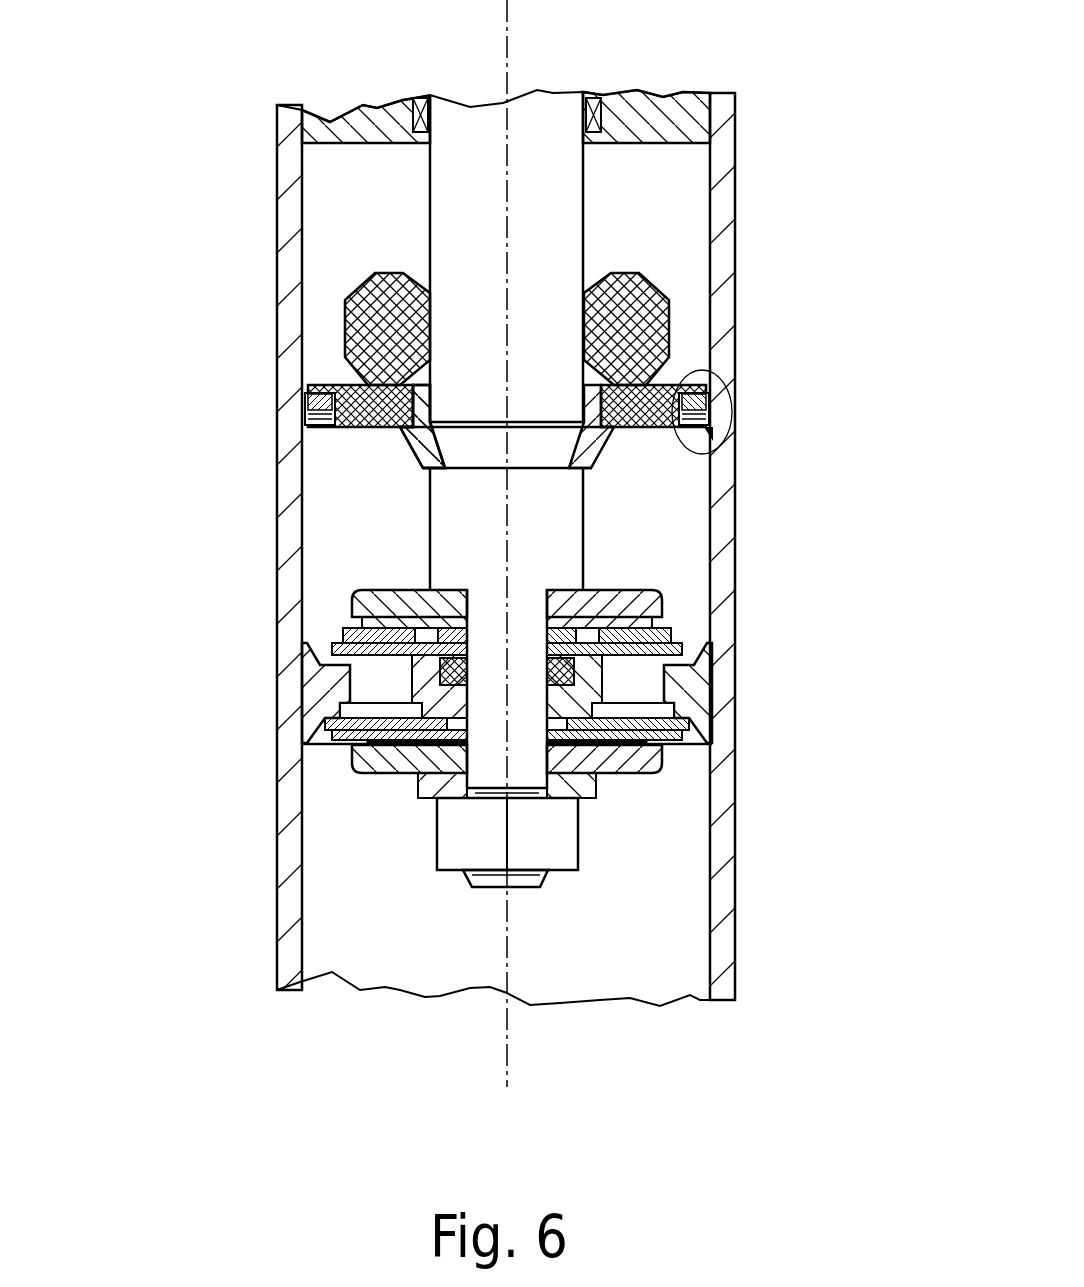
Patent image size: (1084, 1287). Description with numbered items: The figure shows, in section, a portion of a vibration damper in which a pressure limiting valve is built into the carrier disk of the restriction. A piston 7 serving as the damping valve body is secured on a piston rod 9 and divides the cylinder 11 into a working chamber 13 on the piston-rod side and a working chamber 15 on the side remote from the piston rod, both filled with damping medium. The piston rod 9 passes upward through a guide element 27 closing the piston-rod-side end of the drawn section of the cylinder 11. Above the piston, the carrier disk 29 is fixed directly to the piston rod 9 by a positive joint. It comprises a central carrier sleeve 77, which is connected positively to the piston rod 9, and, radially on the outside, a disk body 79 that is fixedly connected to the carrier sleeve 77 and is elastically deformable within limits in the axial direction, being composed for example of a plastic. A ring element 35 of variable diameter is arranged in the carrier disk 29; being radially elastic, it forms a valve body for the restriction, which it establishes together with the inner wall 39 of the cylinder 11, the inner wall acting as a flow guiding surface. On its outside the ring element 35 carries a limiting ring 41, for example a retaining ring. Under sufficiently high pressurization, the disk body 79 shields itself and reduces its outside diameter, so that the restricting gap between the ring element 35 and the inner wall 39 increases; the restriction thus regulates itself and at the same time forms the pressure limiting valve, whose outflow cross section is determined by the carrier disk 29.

The piston 7 is at (690, 695).
The piston rod 9 is at (558, 122).
The cylinder 11 is at (717, 895).
The working chamber 13 is at (662, 212).
The working chamber 15 is at (645, 960).
The piston rod guide 27 is at (670, 110).
The carrier disk 29 is at (387, 437).
The ring element 35 is at (712, 432).
The inner wall 39 is at (705, 283).
The limiting ring 41 is at (705, 402).
The carrier sleeve 77 is at (412, 447).
The disk body 79 is at (347, 387).